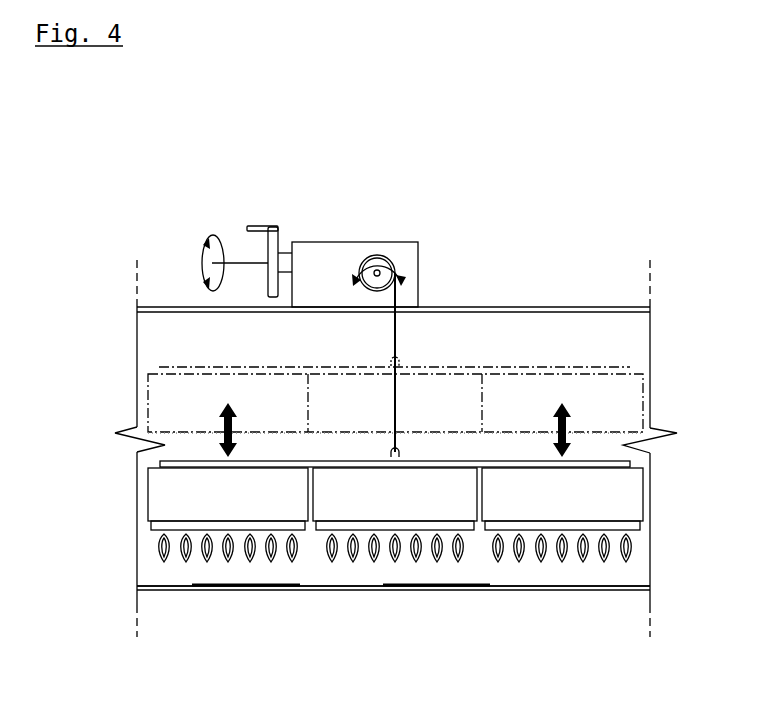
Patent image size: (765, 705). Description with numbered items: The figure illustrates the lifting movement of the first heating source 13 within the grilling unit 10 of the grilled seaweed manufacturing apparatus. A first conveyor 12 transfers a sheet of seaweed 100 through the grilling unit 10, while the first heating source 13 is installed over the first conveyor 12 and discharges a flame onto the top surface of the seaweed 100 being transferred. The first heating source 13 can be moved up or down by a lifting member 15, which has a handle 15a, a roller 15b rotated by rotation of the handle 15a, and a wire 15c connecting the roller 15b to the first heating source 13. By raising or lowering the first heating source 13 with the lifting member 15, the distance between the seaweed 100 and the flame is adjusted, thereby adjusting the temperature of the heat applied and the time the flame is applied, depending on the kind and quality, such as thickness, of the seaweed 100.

The grilling unit 10 is at (557, 300).
The first conveyor 12 is at (625, 586).
The first heating source 13 is at (373, 513).
The lifting member 15 is at (330, 272).
The handle 15a is at (258, 227).
The roller 15b is at (378, 270).
The wire 15c is at (395, 342).
The seaweed 100 is at (188, 580).